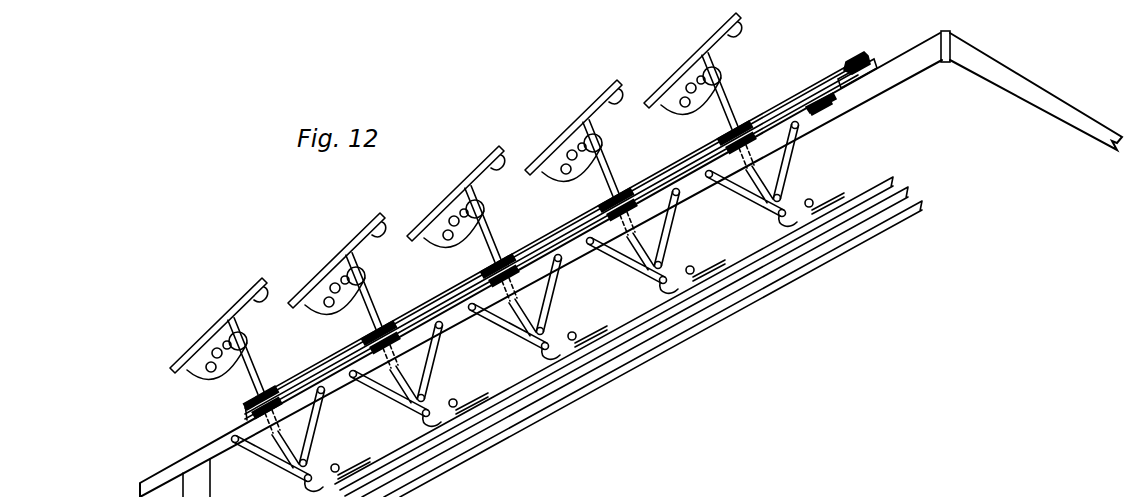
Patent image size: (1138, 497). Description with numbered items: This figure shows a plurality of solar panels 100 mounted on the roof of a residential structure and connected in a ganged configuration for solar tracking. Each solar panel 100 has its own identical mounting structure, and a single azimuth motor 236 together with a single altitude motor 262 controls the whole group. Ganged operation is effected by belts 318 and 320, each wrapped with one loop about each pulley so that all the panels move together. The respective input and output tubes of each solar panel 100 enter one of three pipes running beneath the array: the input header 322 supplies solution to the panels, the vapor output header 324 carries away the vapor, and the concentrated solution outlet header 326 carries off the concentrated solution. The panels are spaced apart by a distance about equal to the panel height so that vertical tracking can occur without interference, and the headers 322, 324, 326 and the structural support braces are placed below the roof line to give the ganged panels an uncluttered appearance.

The solar panel 100 is at (230, 312).
The belt 318 is at (793, 100).
The belt 320 is at (767, 120).
The altitude motor 262 is at (859, 72).
The azimuth motor 236 is at (821, 108).
The input header 322 is at (876, 178).
The vapor output header 324 is at (898, 185).
The concentrated solution outlet header 326 is at (912, 203).